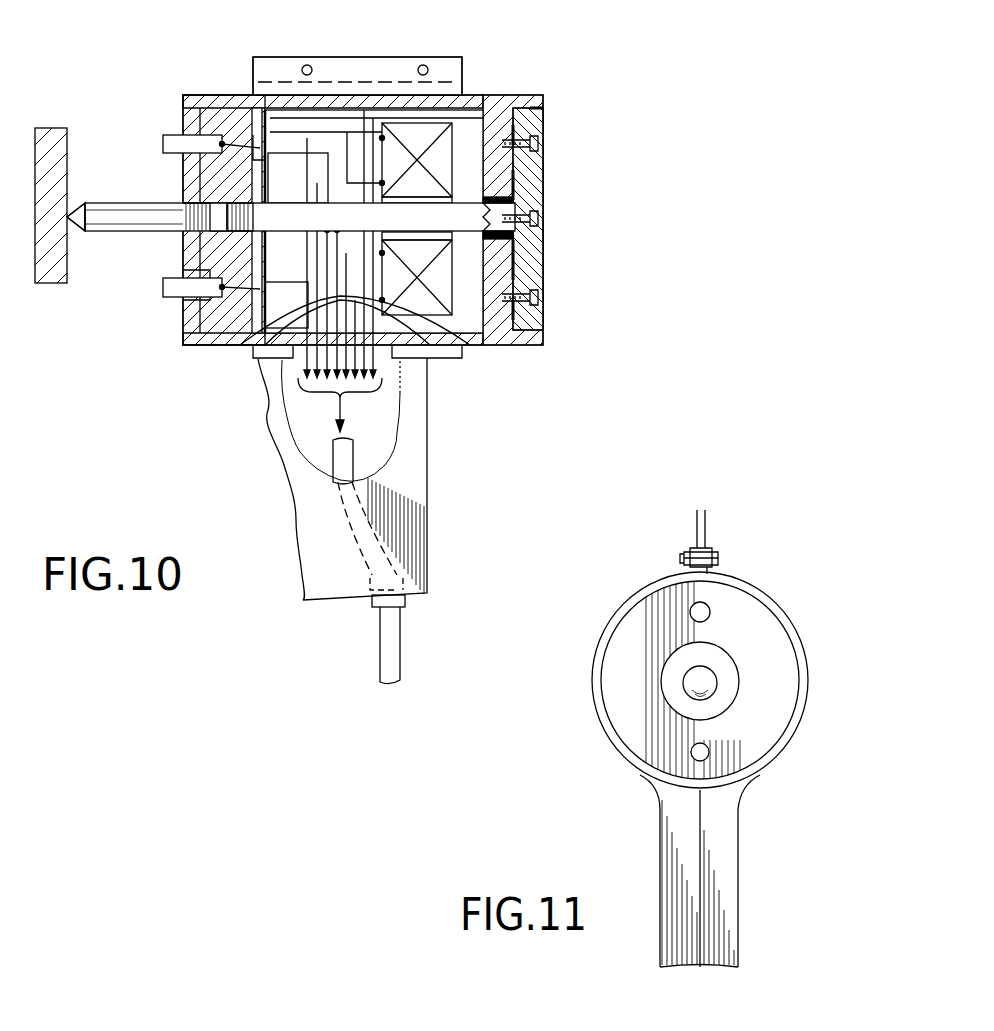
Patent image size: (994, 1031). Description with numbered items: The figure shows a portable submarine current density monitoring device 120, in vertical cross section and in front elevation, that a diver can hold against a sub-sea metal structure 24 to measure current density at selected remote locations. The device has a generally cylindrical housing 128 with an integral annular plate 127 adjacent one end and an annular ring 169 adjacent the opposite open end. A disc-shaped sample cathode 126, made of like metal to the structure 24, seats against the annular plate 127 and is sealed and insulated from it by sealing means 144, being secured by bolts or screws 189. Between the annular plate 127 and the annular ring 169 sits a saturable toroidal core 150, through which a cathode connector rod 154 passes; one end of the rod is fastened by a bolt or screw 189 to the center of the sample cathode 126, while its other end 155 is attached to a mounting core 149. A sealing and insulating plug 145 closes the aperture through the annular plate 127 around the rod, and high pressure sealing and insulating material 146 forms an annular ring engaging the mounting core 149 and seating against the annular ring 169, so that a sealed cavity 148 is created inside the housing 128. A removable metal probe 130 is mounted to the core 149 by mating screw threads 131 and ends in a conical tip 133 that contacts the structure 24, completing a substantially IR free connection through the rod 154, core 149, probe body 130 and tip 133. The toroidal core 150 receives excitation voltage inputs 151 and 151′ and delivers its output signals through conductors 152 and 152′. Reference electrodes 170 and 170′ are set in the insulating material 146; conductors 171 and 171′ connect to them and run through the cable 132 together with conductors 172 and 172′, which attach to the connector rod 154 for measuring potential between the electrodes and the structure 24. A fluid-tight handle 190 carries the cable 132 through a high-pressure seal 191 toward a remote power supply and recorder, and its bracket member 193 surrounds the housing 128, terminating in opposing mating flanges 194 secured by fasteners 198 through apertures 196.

In FIG. 10, the structure 24 is at (47, 130).
In FIG. 10, the portable submarine current density monitoring device 120 is at (590, 75).
In FIG. 10, the sample cathode 126 is at (545, 250).
In FIG. 10, the annular plate 127 is at (505, 278).
In FIG. 10, the housing 128 is at (520, 95).
In FIG. 11, the housing 128 is at (790, 635).
In FIG. 10, the probe 130 is at (138, 236).
In FIG. 11, the probe 130 is at (720, 677).
In FIG. 10, the screw threads 131 is at (200, 250).
In FIG. 10, the cable 132 is at (400, 648).
In FIG. 10, the probe tip 133 is at (78, 208).
In FIG. 11, the probe tip 133 is at (690, 697).
In FIG. 10, the sealing means 144 is at (552, 109).
In FIG. 10, the sealing and insulating plug 145 is at (505, 196).
In FIG. 10, the sealing and insulating material 146 is at (181, 116).
In FIG. 11, the sealing and insulating material 146 is at (616, 668).
In FIG. 10, the cavity 148 is at (475, 122).
In FIG. 10, the mounting core 149 is at (212, 243).
In FIG. 11, the mounting core 149 is at (715, 685).
In FIG. 10, the saturable toroidal core 150 is at (440, 285).
In FIG. 10, the excitation voltage input 151 is at (410, 352).
In FIG. 10, the excitation voltage input 151′ is at (420, 350).
In FIG. 10, the conductor 152 is at (378, 136).
In FIG. 10, the conductor 152′ is at (375, 180).
In FIG. 10, the cathode connector rod 154 is at (326, 202).
In FIG. 10, the end of connector rod 155 is at (207, 200).
In FIG. 10, the annular ring 169 is at (190, 325).
In FIG. 10, the reference electrode 170 is at (178, 138).
In FIG. 11, the reference electrode 170 is at (700, 602).
In FIG. 10, the reference electrode 170′ is at (178, 292).
In FIG. 11, the reference electrode 170′ is at (710, 752).
In FIG. 10, the conductor 171 is at (263, 150).
In FIG. 10, the conductor 171′ is at (285, 280).
In FIG. 10, the conductor 172 is at (333, 308).
In FIG. 10, the conductor 172′ is at (395, 325).
In FIG. 10, the bolt or screw 189 is at (540, 146).
In FIG. 10, the handle 190 is at (428, 466).
In FIG. 11, the handle 190 is at (738, 892).
In FIG. 10, the high-pressure seal 191 is at (385, 605).
In FIG. 10, the bracket member 193 is at (465, 330).
In FIG. 11, the bracket member 193 is at (790, 612).
In FIG. 10, the mating flanges 194 is at (457, 57).
In FIG. 11, the mating flanges 194 is at (706, 515).
In FIG. 10, the apertures 196 is at (423, 60).
In FIG. 11, the fasteners 198 is at (720, 560).